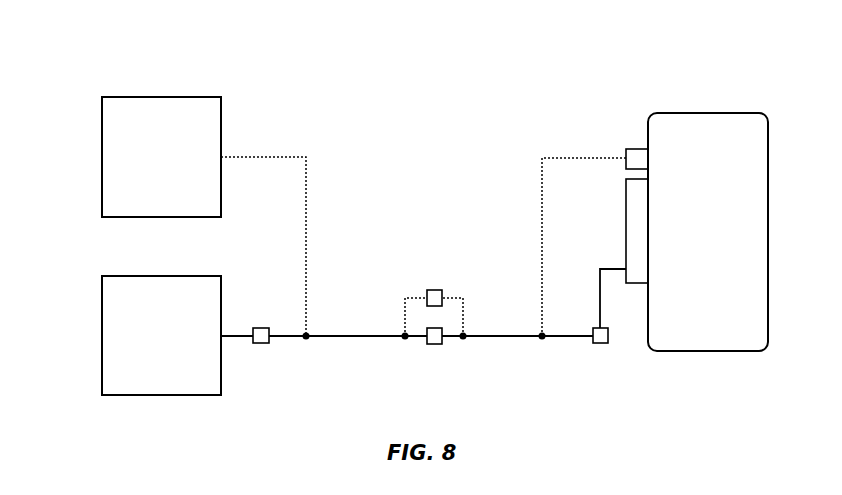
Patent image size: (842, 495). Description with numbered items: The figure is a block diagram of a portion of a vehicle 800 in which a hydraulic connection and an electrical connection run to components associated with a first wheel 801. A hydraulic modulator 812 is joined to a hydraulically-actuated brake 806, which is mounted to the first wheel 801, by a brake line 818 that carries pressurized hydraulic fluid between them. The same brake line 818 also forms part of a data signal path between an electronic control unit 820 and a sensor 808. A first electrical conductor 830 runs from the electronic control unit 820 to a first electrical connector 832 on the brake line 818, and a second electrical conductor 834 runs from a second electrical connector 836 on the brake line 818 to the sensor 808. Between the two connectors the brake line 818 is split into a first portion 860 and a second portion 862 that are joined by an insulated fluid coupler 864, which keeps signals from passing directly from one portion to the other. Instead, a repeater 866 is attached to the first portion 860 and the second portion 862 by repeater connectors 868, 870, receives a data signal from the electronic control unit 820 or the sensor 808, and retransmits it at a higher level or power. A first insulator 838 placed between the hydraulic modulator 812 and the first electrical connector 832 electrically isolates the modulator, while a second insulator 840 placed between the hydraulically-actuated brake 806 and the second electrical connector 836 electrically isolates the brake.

The vehicle 800 is at (96, 44).
The first wheel 801 is at (728, 113).
The hydraulically-actuated brake 806 is at (626, 207).
The sensor 808 is at (635, 149).
The hydraulic modulator 812 is at (161, 335).
The brake line 818 is at (288, 331).
The electronic control unit 820 is at (161, 157).
The first electrical conductor 830 is at (284, 154).
The first electrical connector 832 is at (306, 340).
The second electrical conductor 834 is at (542, 153).
The second electrical connector 836 is at (542, 340).
The first insulator 838 is at (262, 344).
The second insulator 840 is at (600, 344).
The first portion 860 is at (320, 335).
The second portion 862 is at (473, 335).
The insulated fluid coupler 864 is at (435, 344).
The repeater 866 is at (438, 290).
The repeater connector 868 is at (405, 340).
The repeater connector 870 is at (463, 340).